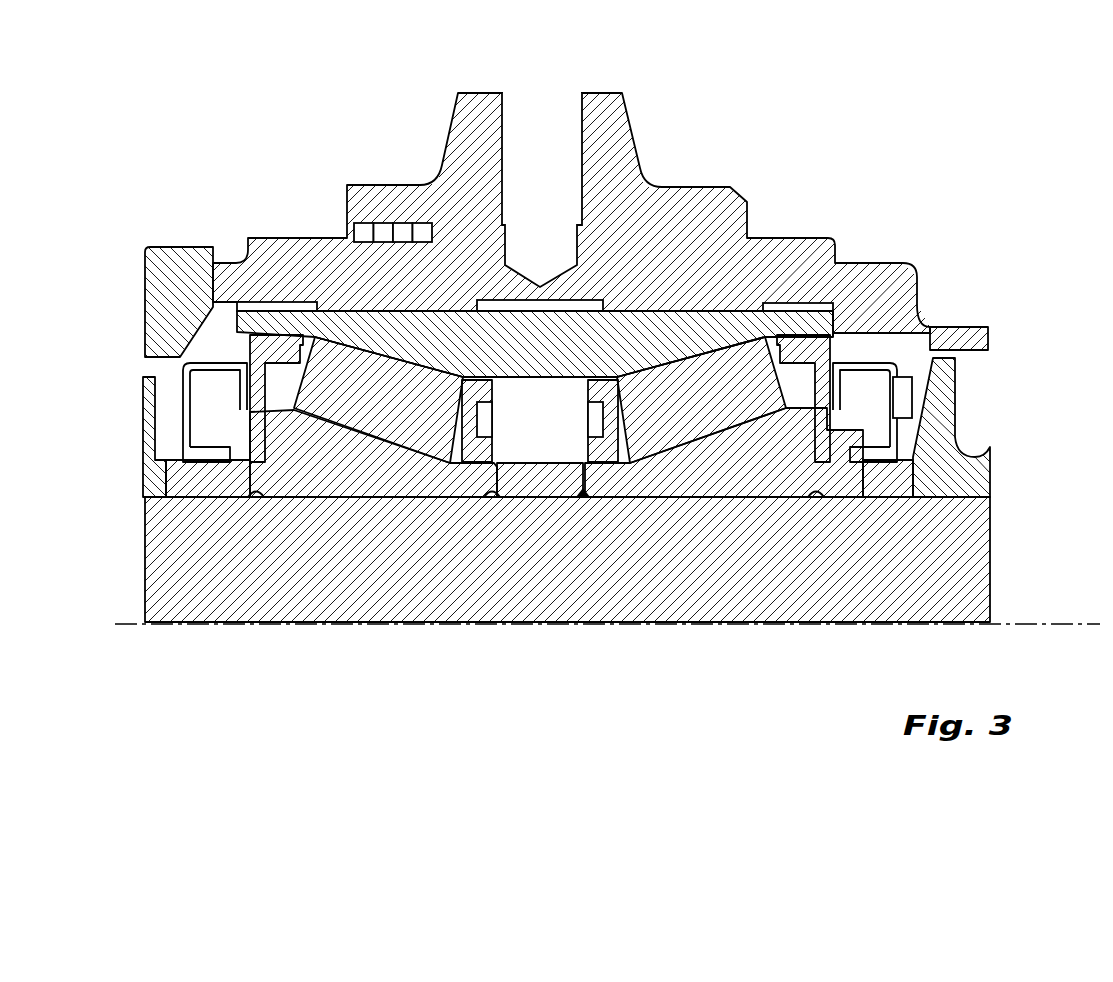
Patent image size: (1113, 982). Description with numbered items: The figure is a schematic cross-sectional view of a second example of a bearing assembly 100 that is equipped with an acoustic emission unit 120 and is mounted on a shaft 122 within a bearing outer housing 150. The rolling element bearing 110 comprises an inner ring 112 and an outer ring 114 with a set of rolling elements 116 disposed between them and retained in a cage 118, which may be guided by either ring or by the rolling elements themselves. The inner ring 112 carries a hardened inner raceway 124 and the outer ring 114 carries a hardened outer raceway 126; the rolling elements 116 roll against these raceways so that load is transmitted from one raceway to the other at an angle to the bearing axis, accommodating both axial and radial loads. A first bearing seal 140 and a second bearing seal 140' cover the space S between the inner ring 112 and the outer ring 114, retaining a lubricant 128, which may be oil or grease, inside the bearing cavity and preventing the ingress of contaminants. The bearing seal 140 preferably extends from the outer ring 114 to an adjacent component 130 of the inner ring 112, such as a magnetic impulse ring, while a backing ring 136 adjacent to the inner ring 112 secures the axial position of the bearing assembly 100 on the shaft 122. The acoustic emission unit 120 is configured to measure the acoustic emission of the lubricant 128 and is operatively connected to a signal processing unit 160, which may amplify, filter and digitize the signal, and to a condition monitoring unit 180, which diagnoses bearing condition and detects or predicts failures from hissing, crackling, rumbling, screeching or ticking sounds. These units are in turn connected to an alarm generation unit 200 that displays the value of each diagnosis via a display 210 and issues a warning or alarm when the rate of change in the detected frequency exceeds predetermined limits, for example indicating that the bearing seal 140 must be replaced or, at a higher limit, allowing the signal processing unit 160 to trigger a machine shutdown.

The bearing assembly 100 is at (780, 86).
The rolling element bearing 110 is at (743, 323).
The inner ring 112 is at (803, 457).
The outer ring 114 is at (820, 317).
The set of rolling elements 116 is at (337, 360).
The cage 118 is at (277, 353).
The acoustic emission unit 120 is at (915, 385).
The shaft 122 is at (957, 577).
The inner raceway 124 is at (690, 453).
The outer raceway 126 is at (678, 378).
The lubricant 128 is at (802, 382).
The adjacent component 130 is at (875, 480).
The backing ring 136 is at (150, 450).
The first bearing seal 140 is at (947, 376).
The second bearing seal 140' is at (173, 272).
The bearing outer housing 150 is at (630, 222).
The signal processing unit 160 is at (422, 223).
The condition monitoring unit 180 is at (402, 223).
The alarm generation unit 200 is at (383, 223).
The display 210 is at (363, 223).
The space S is at (833, 400).